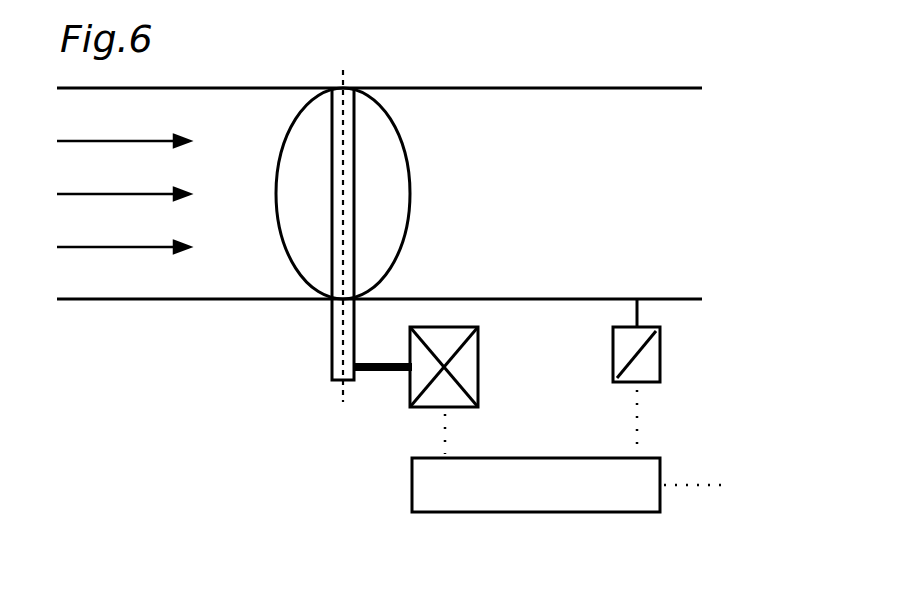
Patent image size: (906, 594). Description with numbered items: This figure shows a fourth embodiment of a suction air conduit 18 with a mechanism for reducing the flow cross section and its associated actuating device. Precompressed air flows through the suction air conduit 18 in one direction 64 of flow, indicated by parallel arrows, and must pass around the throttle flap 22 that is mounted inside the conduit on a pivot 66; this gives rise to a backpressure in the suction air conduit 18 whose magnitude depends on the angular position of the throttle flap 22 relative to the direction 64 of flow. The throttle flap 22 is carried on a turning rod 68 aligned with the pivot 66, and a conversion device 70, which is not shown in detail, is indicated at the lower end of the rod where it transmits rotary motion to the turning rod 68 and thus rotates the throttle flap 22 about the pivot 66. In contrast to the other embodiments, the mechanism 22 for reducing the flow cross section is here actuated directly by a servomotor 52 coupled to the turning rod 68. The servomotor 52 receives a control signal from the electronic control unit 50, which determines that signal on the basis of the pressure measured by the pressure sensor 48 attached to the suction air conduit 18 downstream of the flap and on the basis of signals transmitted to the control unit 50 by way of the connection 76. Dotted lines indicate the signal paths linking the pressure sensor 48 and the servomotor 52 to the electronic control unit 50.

The suction air conduit 18 is at (176, 301).
The direction of flow 64 is at (191, 239).
The throttle flap 22 is at (411, 172).
The turning rod 68 is at (331, 323).
The pivot 66 is at (346, 85).
The conversion device 70 is at (322, 389).
The servomotor 52 is at (480, 345).
The pressure sensor 48 is at (662, 350).
The electronic control unit 50 is at (533, 498).
The connection 76 is at (723, 488).